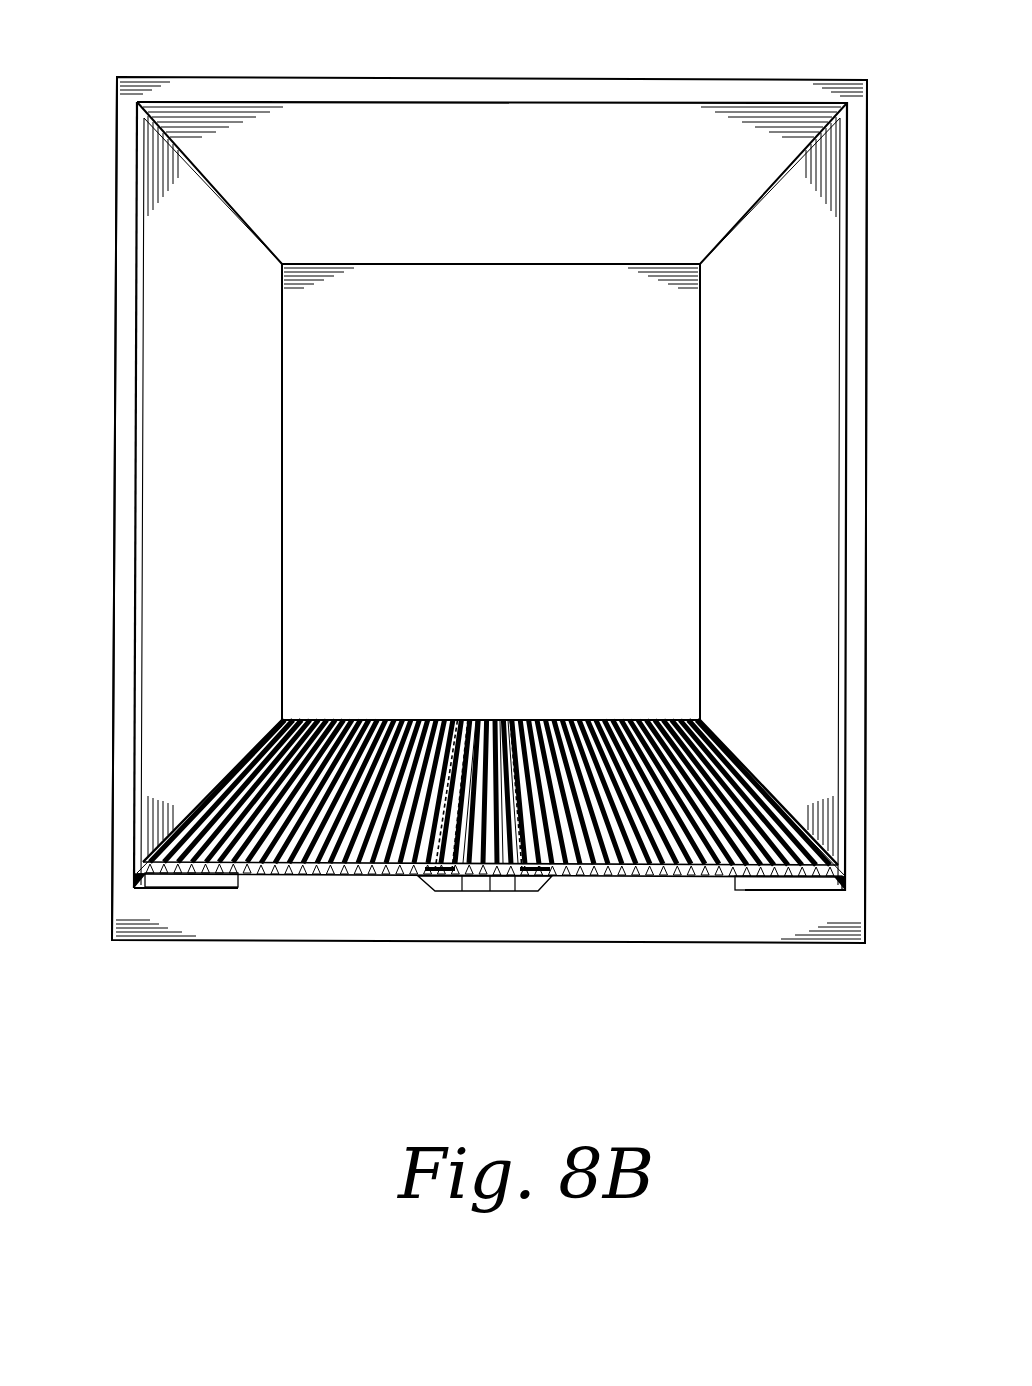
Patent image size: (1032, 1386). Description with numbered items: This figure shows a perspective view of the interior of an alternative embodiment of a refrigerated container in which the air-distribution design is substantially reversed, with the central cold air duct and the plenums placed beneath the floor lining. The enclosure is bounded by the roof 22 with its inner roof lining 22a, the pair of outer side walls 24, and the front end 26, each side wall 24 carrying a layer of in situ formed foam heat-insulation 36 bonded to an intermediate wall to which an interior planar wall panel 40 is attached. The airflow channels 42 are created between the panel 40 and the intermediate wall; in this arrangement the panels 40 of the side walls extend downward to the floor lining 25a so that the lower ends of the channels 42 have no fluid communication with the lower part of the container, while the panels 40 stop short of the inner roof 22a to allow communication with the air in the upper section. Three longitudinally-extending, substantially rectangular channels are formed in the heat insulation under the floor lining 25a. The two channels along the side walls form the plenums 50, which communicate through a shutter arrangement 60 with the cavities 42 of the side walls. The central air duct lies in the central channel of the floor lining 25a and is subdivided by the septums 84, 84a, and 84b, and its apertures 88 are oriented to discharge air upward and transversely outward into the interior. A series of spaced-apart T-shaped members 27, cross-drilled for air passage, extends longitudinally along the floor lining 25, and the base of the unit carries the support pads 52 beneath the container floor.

The roof 22 is at (444, 76).
The roof lining 22a is at (502, 192).
The side wall 24 is at (116, 523).
The floor lining 25 is at (491, 844).
The floor lining 25a is at (490, 896).
The front end 26 is at (500, 466).
The T-shaped members 27 is at (344, 746).
The foam heat-insulation 36 is at (672, 93).
The interior planar wall panel 40 is at (225, 419).
The airflow channels 42 is at (140, 518).
The plenum 50 is at (166, 891).
The support pad 52 is at (206, 890).
The shutter arrangement 60 is at (141, 883).
The septum 84 is at (502, 891).
The septum 84a is at (454, 880).
The septum 84b is at (529, 882).
The apertures 88 is at (515, 720).